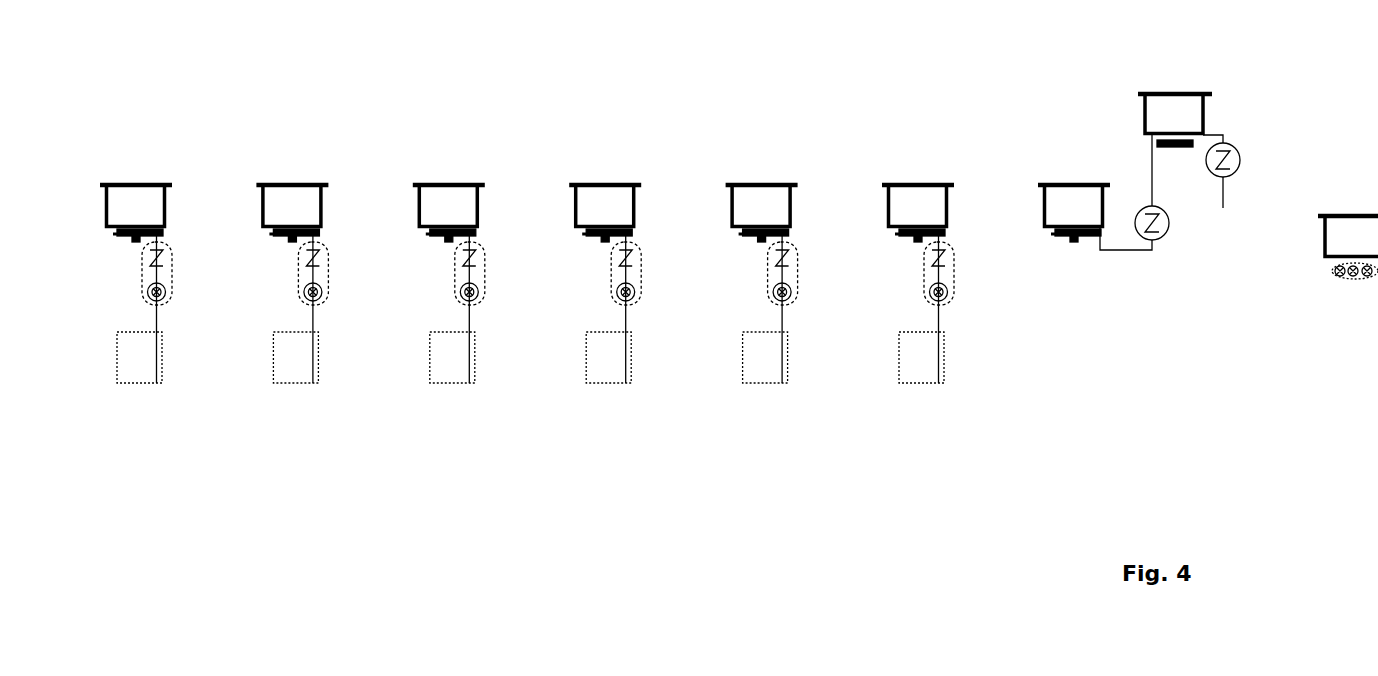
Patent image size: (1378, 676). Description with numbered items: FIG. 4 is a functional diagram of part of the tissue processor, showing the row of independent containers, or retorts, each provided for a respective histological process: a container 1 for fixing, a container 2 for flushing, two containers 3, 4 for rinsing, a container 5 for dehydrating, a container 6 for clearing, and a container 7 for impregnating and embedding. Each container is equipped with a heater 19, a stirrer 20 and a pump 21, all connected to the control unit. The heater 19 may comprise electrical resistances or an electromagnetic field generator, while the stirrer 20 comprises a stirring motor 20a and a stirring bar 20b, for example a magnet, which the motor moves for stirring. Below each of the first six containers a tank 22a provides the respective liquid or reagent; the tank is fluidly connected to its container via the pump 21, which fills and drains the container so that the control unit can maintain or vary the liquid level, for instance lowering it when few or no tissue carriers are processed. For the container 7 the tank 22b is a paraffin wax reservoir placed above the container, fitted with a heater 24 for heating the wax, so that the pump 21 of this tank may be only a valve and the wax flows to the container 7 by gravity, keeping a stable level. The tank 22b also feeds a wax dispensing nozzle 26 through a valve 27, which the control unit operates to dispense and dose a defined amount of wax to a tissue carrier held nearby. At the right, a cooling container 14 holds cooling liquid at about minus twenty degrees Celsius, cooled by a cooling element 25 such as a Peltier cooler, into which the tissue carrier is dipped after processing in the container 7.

The container for fixing 1 is at (136, 181).
The container for flushing 2 is at (292, 181).
The container for rinsing 3 is at (449, 181).
The container for rinsing 4 is at (605, 181).
The container for dehydrating 5 is at (762, 181).
The container for clearing 6 is at (918, 181).
The container for impregnating and embedding 7 is at (1074, 179).
The cooling container 14 is at (1366, 214).
The heater 19 is at (1066, 244).
The stirrer 20 is at (1076, 244).
The stirring motor 20a is at (574, 247).
The stirring bar 20b is at (615, 186).
The pump 21 is at (1167, 226).
The tank 22a is at (557, 335).
The tank 22b is at (1172, 98).
The heater 24 is at (1166, 150).
The cooling element 25 is at (1351, 280).
The wax dispensing nozzle 26 is at (1226, 200).
The valve 27 is at (1248, 160).